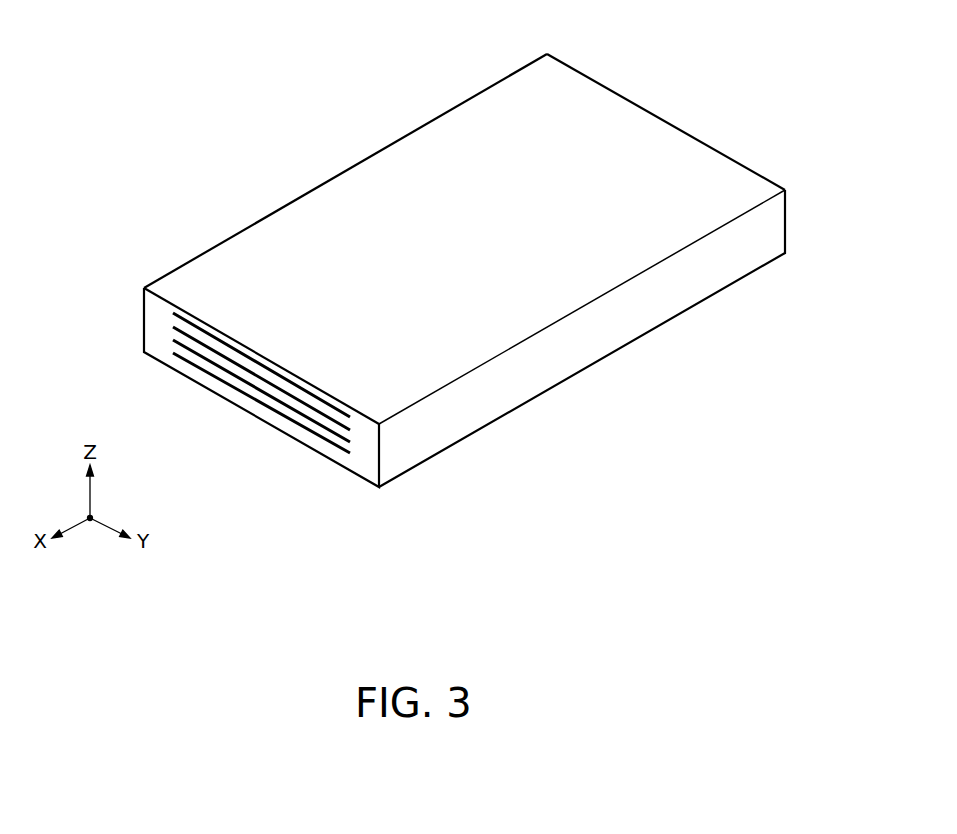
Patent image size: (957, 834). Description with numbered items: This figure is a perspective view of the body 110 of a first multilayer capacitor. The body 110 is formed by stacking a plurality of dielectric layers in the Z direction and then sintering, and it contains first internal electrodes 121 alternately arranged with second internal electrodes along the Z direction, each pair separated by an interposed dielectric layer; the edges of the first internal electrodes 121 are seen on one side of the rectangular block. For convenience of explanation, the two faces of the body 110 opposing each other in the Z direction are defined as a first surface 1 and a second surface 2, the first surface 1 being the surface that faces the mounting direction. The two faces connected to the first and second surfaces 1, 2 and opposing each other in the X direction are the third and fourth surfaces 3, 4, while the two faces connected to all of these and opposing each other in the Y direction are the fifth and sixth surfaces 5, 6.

The first surface 1 is at (420, 270).
The second surface 2 is at (464, 232).
The third surface 3 is at (217, 393).
The fourth surface 4 is at (687, 137).
The fifth surface 5 is at (660, 293).
The sixth surface 6 is at (238, 235).
The body 110 is at (303, 213).
The first internal electrode 121 is at (322, 438).